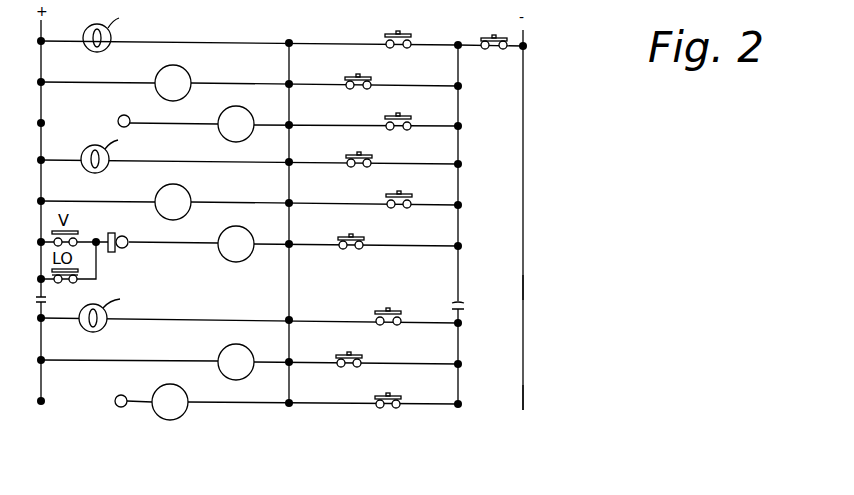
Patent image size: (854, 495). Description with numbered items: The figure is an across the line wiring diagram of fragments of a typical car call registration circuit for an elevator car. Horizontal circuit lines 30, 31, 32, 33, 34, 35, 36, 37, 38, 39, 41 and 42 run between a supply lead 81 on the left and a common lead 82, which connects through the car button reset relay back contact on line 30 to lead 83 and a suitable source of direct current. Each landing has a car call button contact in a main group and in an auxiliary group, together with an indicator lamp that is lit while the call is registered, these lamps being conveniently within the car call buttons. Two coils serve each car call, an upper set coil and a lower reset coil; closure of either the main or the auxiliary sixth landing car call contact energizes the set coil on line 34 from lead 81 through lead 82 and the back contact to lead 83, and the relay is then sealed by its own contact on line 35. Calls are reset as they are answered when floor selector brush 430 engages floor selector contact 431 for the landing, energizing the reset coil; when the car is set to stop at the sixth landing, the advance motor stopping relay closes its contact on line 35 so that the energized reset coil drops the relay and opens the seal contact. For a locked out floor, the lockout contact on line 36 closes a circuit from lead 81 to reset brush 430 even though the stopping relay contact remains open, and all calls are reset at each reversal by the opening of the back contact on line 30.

The line 30 is at (301, 29).
The line 31 is at (304, 78).
The line 32 is at (387, 110).
The line 33 is at (301, 153).
The line 34 is at (304, 197).
The line 35 is at (392, 230).
The line 36 is at (542, 287).
The line 37 is at (301, 310).
The line 38 is at (304, 355).
The line 39 is at (388, 389).
The line 41 is at (364, 239).
The line 42 is at (604, 384).
The lead 81 is at (41, 127).
The lead 82 is at (458, 110).
The lead 83 is at (523, 164).
The floor selector brush 430 is at (111, 252).
The floor selector contact 431 is at (120, 116).